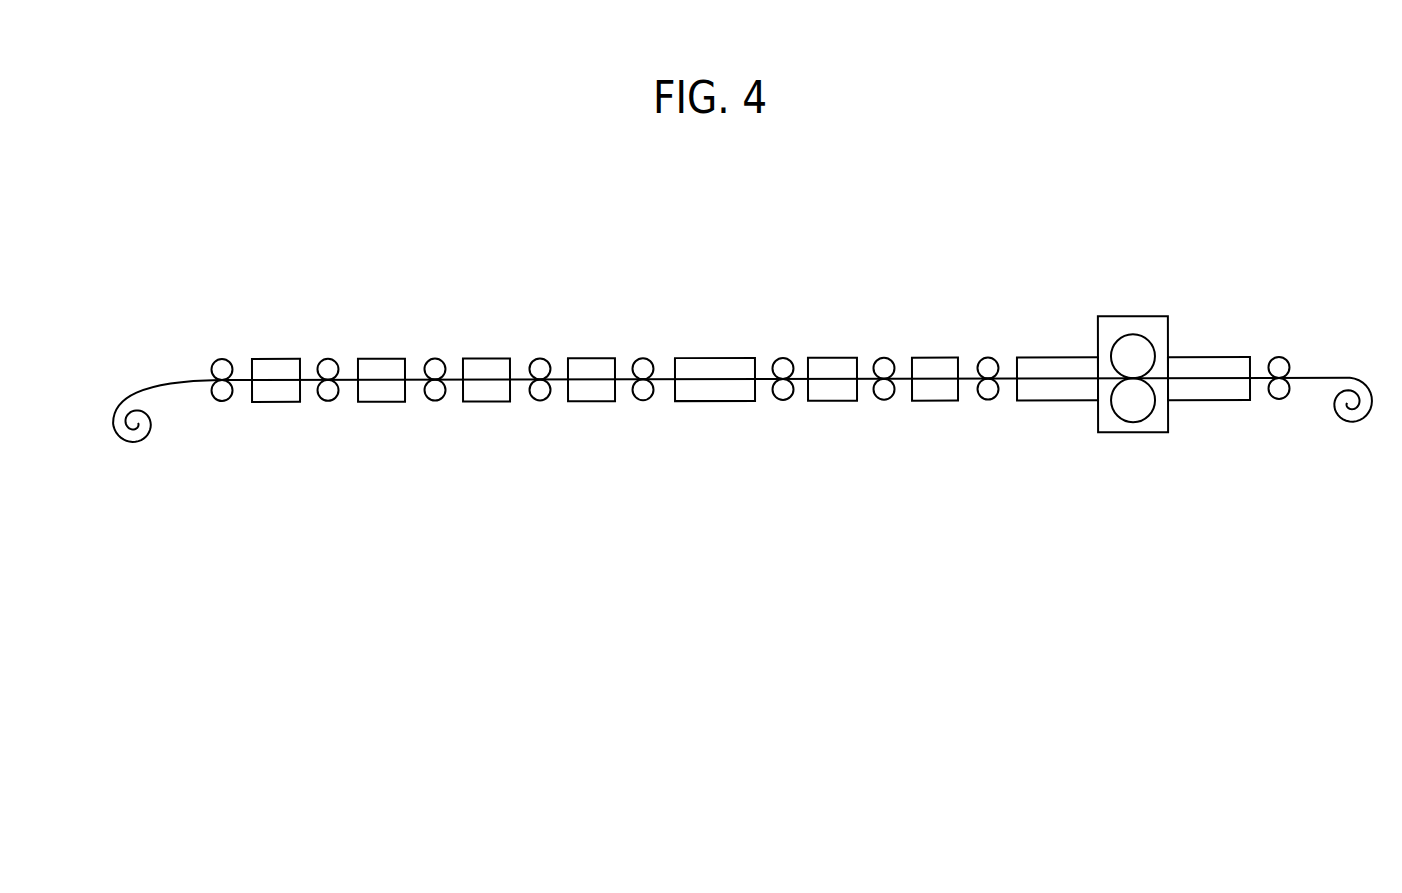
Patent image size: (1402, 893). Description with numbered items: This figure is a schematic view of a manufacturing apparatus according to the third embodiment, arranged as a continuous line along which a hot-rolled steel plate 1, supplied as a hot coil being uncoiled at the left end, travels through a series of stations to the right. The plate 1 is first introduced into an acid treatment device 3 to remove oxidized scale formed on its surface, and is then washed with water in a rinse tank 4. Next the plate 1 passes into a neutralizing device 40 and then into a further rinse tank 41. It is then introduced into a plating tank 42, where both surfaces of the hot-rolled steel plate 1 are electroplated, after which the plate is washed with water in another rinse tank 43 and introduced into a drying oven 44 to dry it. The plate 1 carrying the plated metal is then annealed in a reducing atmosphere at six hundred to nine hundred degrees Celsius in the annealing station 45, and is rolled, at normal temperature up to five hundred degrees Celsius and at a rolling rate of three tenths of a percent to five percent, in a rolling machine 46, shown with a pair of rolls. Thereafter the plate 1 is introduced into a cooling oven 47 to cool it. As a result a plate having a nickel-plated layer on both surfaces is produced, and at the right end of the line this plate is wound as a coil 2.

The hot-rolled steel plate 1 is at (152, 438).
The coil 2 is at (1362, 422).
The acid treatment device 3 is at (277, 359).
The rinse tank 4 is at (375, 312).
The neutralizing device 40 is at (490, 359).
The rinse tank 41 is at (600, 358).
The plating tank 42 is at (714, 358).
The rinse tank 43 is at (828, 357).
The drying oven 44 is at (934, 357).
The annealing unit 45 is at (1040, 356).
The rolling machine 46 is at (1143, 265).
The cooling oven 47 is at (1230, 315).